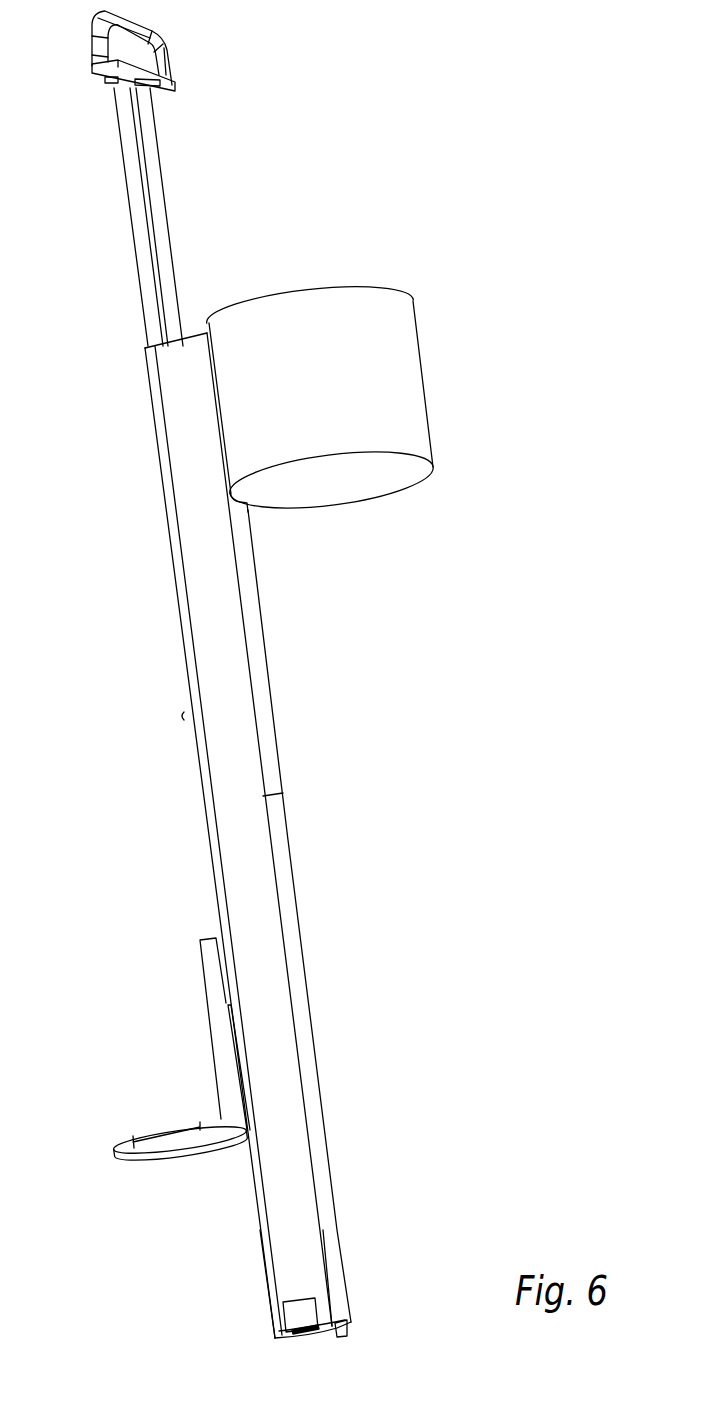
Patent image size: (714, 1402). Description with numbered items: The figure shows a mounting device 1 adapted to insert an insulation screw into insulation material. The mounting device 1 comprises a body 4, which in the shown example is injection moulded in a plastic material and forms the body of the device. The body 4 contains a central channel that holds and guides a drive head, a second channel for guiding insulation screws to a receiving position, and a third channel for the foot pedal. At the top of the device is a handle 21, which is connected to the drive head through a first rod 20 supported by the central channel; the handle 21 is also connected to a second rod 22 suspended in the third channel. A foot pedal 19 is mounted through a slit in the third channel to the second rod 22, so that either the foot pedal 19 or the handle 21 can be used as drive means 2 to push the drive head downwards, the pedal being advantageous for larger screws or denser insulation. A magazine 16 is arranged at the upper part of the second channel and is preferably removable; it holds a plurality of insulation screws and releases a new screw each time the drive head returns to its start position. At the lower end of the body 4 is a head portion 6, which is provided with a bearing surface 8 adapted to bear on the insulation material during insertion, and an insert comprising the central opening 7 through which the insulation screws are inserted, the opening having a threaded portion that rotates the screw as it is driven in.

The mounting device 1 is at (374, 108).
The drive means 2 is at (210, 114).
The body 4 is at (235, 720).
The head portion 6 is at (391, 1287).
The central opening 7 is at (326, 1350).
The bearing surface 8 is at (282, 1343).
The magazine 16 is at (412, 430).
The foot pedal 19 is at (147, 1152).
The first rod 20 is at (166, 272).
The handle 21 is at (170, 45).
The second rod 22 is at (148, 280).